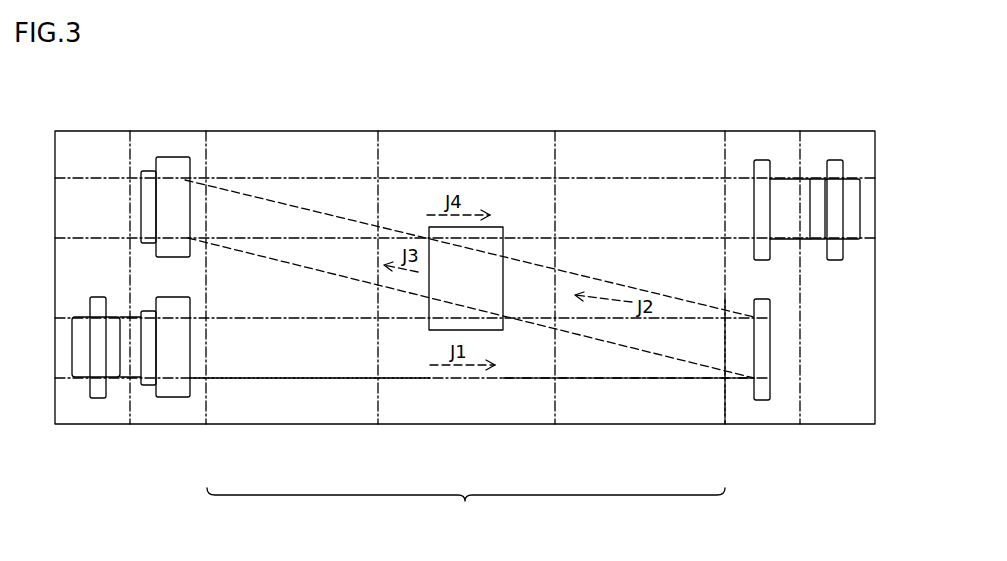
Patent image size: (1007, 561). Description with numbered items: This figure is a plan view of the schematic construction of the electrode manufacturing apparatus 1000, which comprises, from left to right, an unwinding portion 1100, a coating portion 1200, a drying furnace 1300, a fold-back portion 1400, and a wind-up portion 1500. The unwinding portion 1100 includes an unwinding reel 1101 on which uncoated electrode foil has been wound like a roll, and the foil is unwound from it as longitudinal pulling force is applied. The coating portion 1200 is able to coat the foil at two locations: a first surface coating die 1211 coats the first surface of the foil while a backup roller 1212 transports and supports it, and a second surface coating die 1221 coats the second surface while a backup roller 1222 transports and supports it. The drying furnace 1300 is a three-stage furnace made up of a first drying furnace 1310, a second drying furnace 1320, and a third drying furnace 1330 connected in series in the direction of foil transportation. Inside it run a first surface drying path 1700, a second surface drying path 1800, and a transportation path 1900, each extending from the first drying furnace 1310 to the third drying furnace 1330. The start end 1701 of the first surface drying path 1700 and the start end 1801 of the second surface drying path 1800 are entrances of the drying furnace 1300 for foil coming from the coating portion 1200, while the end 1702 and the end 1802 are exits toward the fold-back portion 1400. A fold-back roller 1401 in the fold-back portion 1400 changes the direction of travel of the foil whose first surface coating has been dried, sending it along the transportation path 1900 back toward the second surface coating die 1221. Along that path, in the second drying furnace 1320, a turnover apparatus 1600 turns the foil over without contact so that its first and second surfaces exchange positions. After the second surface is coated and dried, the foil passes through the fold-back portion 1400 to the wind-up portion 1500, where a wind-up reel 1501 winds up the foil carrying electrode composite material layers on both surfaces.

The electrode manufacturing apparatus 1000 is at (614, 110).
The unwinding portion 1100 is at (90, 424).
The unwinding reel 1101 is at (98, 297).
The coating portion 1200 is at (160, 424).
The first surface coating die 1211 is at (143, 311).
The backup roller 1212 is at (190, 297).
The second surface coating die 1221 is at (141, 175).
The backup roller 1222 is at (180, 157).
The drying furnace 1300 is at (466, 505).
The first drying furnace 1310 is at (287, 424).
The second drying furnace 1320 is at (465, 424).
The third drying furnace 1330 is at (643, 424).
The fold-back portion 1400 is at (763, 424).
The fold-back roller 1401 is at (780, 290).
The wind-up portion 1500 is at (840, 424).
The wind-up reel 1501 is at (837, 260).
The turnover apparatus 1600 is at (505, 246).
The first surface drying path 1700 is at (583, 380).
The start end 1701 is at (212, 380).
The end 1702 is at (720, 382).
The second surface drying path 1800 is at (620, 178).
The start end 1801 is at (207, 200).
The end 1802 is at (720, 203).
The transportation path 1900 is at (630, 286).